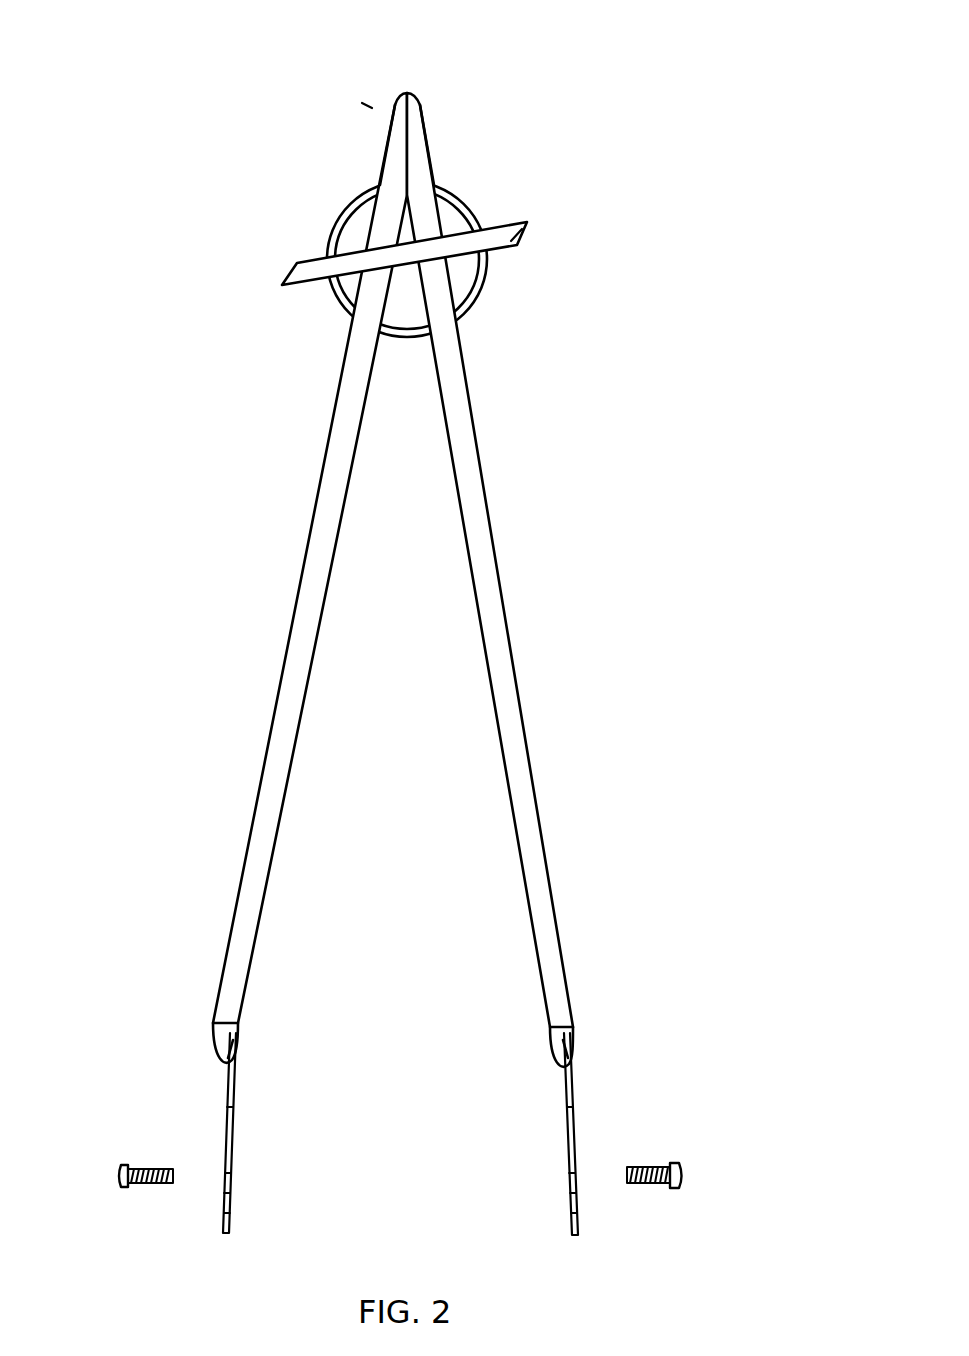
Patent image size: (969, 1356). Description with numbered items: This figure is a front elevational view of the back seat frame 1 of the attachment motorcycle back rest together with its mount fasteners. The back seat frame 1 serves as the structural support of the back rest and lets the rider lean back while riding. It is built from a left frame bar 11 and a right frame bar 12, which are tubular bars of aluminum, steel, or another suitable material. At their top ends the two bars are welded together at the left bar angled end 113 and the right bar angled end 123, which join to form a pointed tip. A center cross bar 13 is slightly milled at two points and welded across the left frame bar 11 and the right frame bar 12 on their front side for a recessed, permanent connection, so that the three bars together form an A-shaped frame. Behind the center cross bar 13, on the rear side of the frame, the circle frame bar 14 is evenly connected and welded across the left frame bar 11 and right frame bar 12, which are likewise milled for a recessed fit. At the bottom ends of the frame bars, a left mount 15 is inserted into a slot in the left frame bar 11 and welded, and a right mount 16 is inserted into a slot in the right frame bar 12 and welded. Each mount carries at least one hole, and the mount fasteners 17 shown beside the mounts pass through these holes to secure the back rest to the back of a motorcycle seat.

The back seat frame 1 is at (362, 103).
The left frame bar 11 is at (485, 563).
The right frame bar 12 is at (312, 598).
The center cross bar 13 is at (527, 222).
The circle frame bar 14 is at (328, 238).
The left mount 15 is at (575, 1082).
The right mount 16 is at (223, 1088).
The mount fastener 17 is at (120, 1173).
The left bar angled end 113 is at (412, 123).
The right bar angled end 123 is at (403, 137).